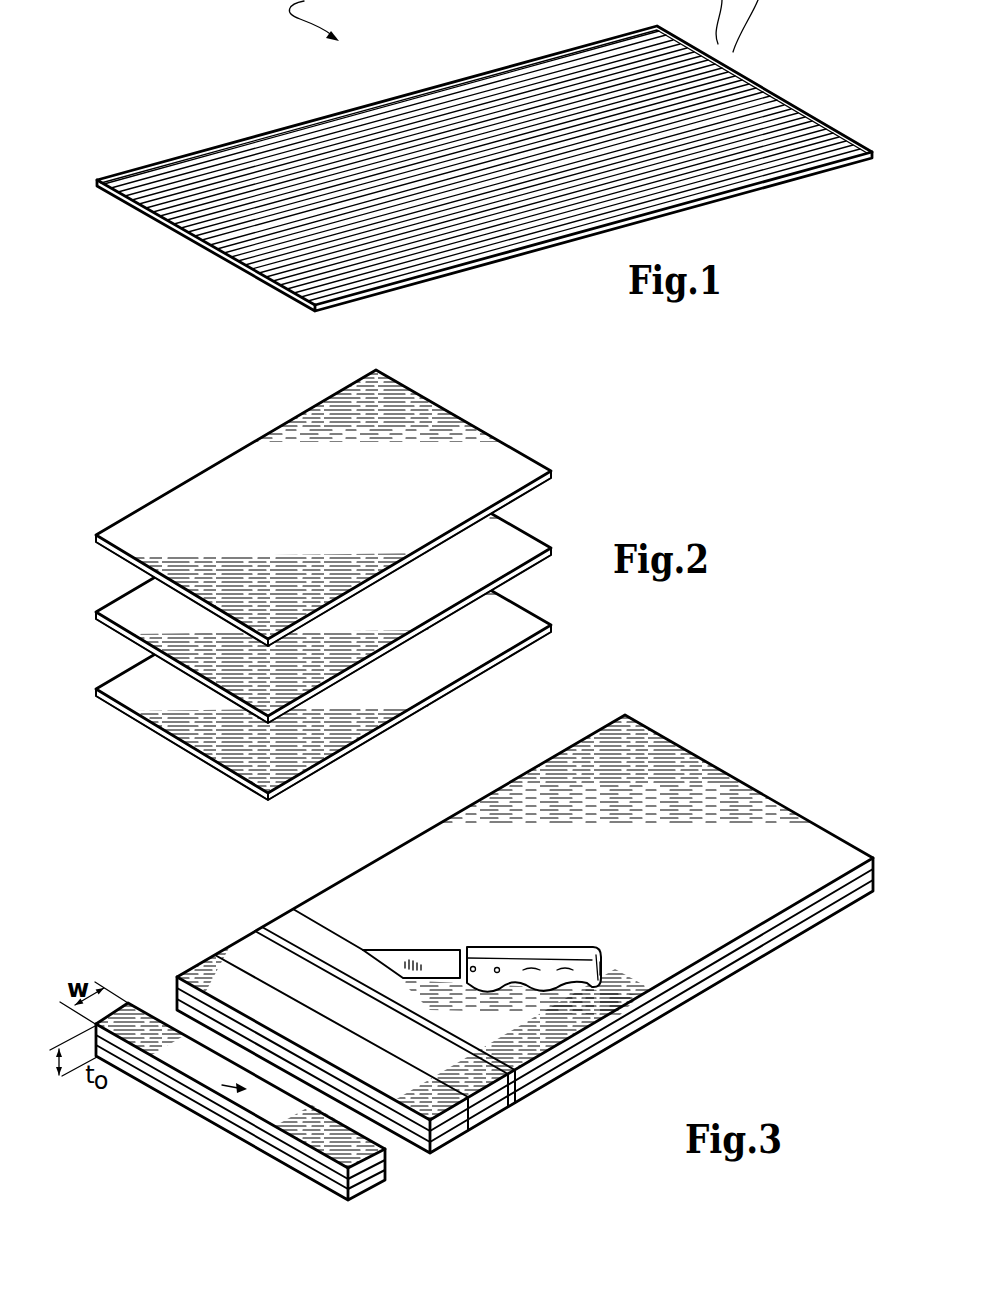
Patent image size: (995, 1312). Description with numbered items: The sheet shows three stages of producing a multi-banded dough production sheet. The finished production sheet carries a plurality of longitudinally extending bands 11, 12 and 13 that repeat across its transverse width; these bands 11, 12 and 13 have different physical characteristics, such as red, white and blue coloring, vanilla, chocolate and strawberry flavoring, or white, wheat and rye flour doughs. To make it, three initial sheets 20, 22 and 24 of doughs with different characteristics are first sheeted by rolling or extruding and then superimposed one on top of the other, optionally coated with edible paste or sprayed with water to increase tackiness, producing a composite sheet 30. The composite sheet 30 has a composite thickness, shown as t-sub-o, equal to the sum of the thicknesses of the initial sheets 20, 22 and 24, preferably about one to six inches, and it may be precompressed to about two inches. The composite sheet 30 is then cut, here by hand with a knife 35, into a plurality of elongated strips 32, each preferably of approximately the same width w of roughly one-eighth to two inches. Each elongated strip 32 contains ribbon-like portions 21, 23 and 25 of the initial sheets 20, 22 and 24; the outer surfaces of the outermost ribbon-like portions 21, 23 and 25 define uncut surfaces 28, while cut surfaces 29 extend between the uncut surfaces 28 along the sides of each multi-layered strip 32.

In FIG. 1, the band 11 is at (98, 195).
In FIG. 1, the band 12 is at (107, 197).
In FIG. 1, the band 13 is at (123, 203).
In FIG. 2, the initial sheet 20 is at (461, 440).
In FIG. 3, the initial sheet 20 is at (660, 992).
In FIG. 2, the initial sheet 22 is at (527, 539).
In FIG. 3, the initial sheet 22 is at (650, 1010).
In FIG. 2, the initial sheet 24 is at (504, 635).
In FIG. 3, the initial sheet 24 is at (630, 1032).
In FIG. 3, the composite sheet 30 is at (685, 778).
In FIG. 3, the elongated strip 32 is at (243, 948).
In FIG. 3, the ribbon-like portion 21 is at (174, 979).
In FIG. 3, the ribbon-like portion 23 is at (174, 991).
In FIG. 3, the ribbon-like portion 25 is at (174, 1002).
In FIG. 3, the uncut surface 28 is at (255, 1115).
In FIG. 3, the cut surface 29 is at (293, 1160).
In FIG. 3, the knife 35 is at (435, 950).